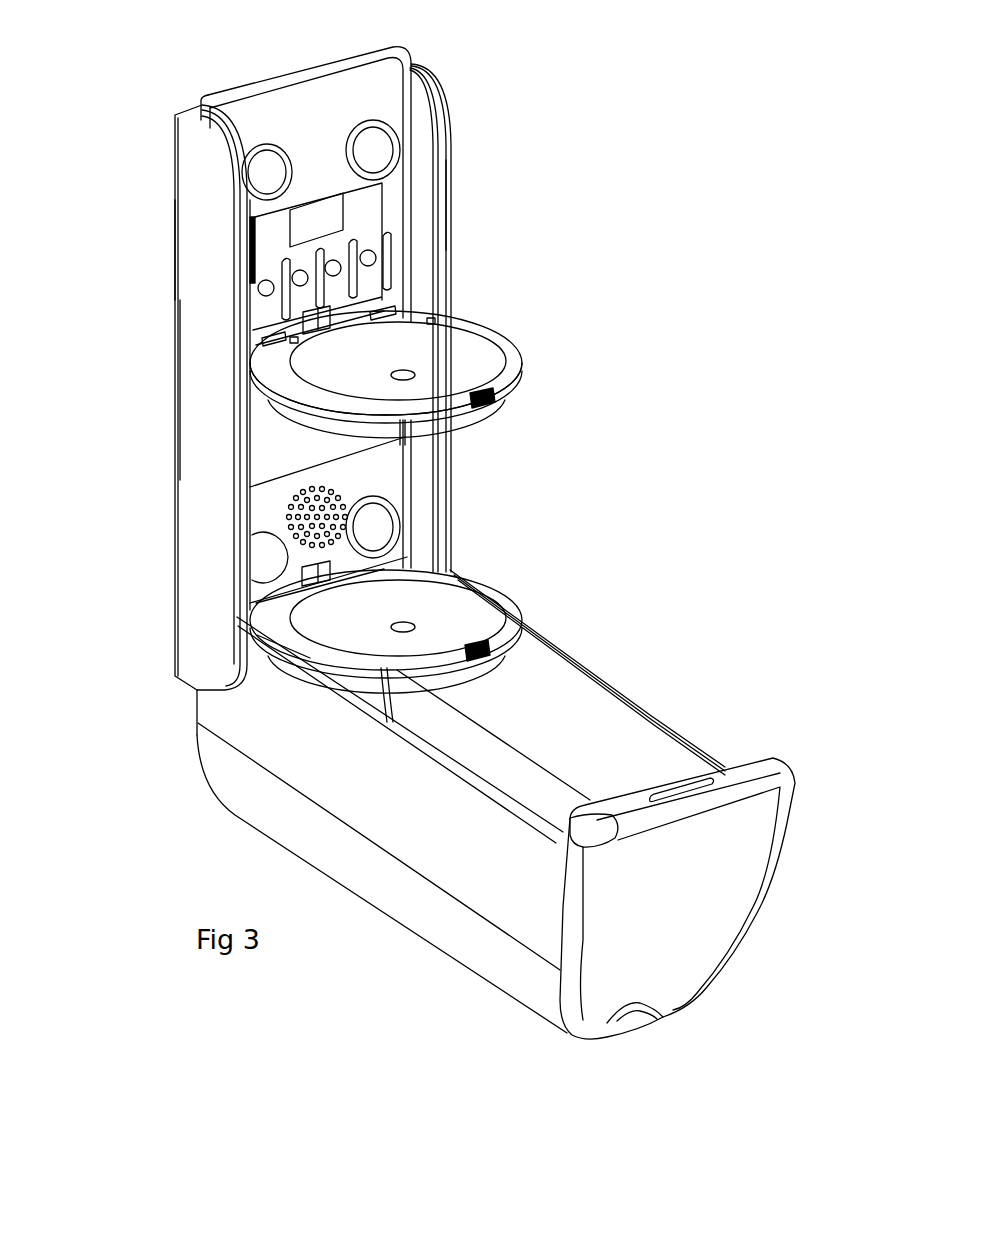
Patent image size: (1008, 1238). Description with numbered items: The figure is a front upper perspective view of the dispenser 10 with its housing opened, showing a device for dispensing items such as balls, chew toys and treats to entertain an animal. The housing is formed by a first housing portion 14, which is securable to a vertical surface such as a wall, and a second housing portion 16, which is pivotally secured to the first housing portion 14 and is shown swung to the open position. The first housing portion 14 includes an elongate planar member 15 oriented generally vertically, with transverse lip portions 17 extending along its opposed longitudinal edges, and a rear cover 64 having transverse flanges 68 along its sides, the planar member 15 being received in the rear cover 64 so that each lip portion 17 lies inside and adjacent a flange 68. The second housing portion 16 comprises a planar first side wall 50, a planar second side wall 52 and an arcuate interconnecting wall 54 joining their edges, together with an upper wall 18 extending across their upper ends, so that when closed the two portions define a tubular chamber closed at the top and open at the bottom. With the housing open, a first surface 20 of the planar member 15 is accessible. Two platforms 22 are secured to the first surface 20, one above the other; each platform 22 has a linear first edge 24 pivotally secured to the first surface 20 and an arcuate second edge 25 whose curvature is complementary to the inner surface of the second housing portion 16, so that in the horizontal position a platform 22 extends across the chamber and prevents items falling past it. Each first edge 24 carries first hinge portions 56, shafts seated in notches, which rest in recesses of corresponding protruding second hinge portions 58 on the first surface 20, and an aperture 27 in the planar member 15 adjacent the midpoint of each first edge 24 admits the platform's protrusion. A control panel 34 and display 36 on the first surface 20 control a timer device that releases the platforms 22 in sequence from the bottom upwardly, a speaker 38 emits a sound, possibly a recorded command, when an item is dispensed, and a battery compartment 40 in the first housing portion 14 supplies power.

The dispenser 10 is at (598, 210).
The first housing portion 14 is at (170, 200).
The elongate planar member 15 is at (290, 130).
The second housing portion 16 is at (673, 720).
The lip portion 17 is at (288, 432).
The upper wall 18 is at (713, 865).
The first surface 20 is at (387, 93).
The platform 22 is at (468, 325).
The first edge 24 is at (338, 325).
The arcuate second edge 25 is at (520, 365).
The aperture 27 is at (313, 318).
The control panel 34 is at (353, 222).
The display 36 is at (340, 210).
The speaker 38 is at (290, 519).
The battery compartment 40 is at (370, 437).
The first side wall 50 is at (340, 755).
The second side wall 52 is at (612, 708).
The interconnecting wall 54 is at (427, 937).
The first hinge portion 56 is at (380, 327).
The second hinge portion 58 is at (378, 312).
The rear cover 64 is at (172, 287).
The flange 68 is at (447, 192).